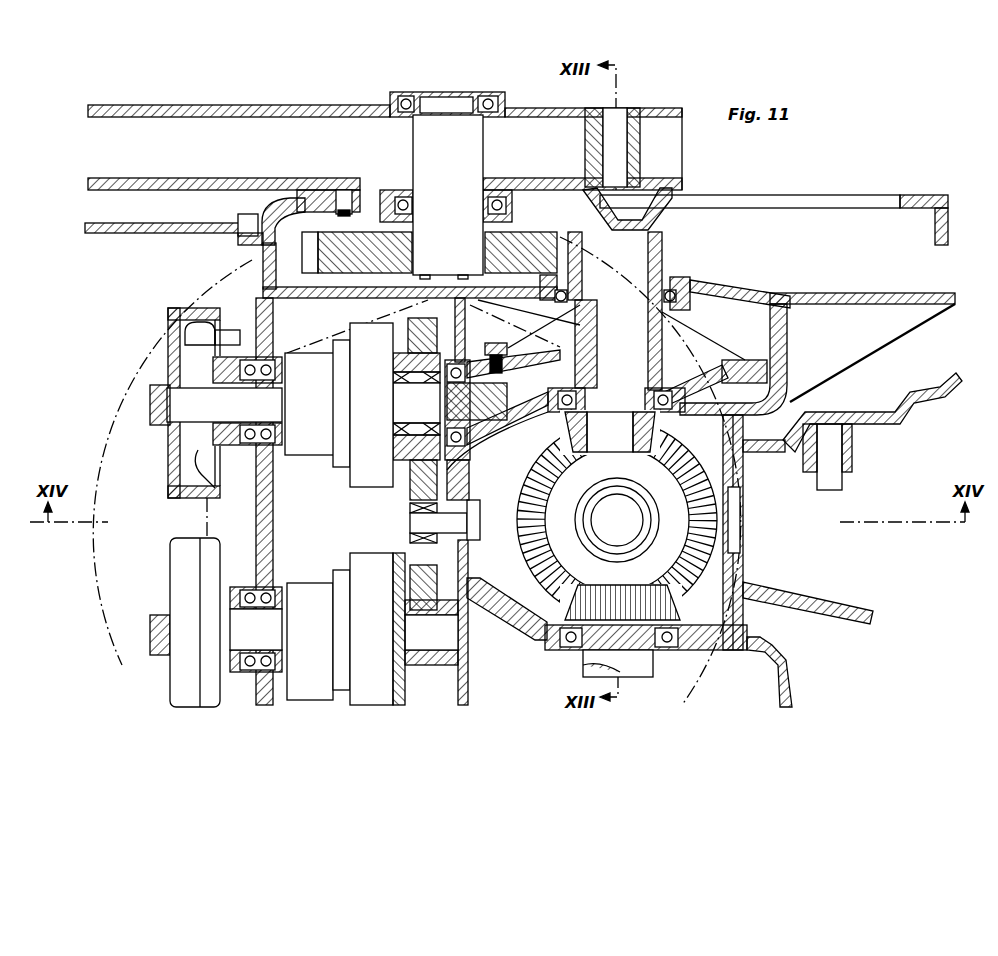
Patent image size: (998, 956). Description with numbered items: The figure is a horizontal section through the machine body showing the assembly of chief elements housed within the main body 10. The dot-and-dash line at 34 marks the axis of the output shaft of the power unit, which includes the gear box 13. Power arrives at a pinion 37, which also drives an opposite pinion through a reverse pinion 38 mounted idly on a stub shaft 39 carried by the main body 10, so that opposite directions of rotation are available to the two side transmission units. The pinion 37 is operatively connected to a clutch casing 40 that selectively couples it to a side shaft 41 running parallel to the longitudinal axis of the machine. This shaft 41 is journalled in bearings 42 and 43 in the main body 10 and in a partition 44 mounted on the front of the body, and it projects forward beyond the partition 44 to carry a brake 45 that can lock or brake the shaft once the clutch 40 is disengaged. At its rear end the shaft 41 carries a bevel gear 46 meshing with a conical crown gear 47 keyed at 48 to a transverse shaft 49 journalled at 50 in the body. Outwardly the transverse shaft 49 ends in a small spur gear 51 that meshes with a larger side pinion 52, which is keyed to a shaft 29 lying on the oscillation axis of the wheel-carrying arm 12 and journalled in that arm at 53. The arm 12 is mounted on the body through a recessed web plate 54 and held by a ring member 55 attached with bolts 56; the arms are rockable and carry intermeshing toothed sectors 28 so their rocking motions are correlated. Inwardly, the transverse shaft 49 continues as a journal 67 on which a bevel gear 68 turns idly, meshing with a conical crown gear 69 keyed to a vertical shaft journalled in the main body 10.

The main body 10 is at (512, 610).
The arm 12 is at (305, 108).
The gear box 13 is at (842, 540).
The intermeshing toothed sector 28 is at (625, 115).
The shaft 29 is at (465, 155).
The axis of the output shaft 34 is at (893, 523).
The pinion 37 is at (440, 336).
The reverse pinion 38 is at (410, 498).
The stub shaft 39 is at (470, 515).
The clutch casing 40 is at (362, 430).
The side shaft 41 is at (450, 509).
The bearing 42 is at (476, 450).
The bearing 43 is at (283, 393).
The partition 44 is at (273, 340).
The brake 45 is at (168, 470).
The bevel gear 46 is at (488, 430).
The conical crown gear 47 is at (755, 372).
The key 48 is at (575, 352).
The transverse shaft 49 is at (640, 360).
The journal bearing 50 is at (688, 282).
The spur gear 51 is at (664, 256).
The side pinion 52 is at (523, 339).
The bearing 53 is at (490, 98).
The web plate 54 is at (660, 204).
The ring member 55 is at (292, 208).
The bolt 56 is at (362, 192).
The journal 67 is at (614, 440).
The bevel gear 68 is at (660, 432).
The conical crown gear 69 is at (692, 498).